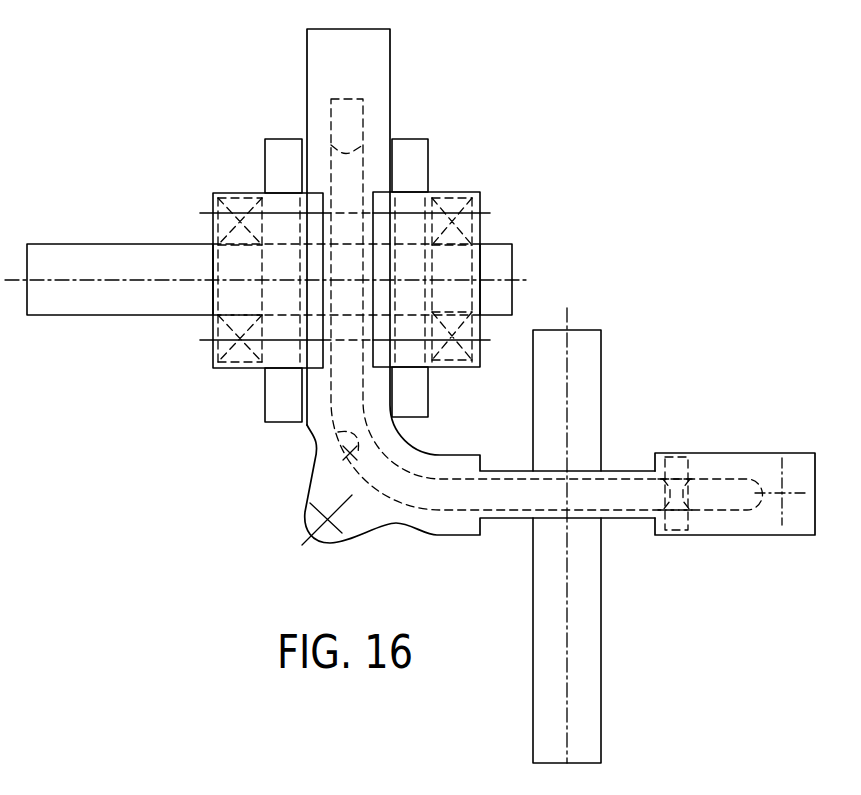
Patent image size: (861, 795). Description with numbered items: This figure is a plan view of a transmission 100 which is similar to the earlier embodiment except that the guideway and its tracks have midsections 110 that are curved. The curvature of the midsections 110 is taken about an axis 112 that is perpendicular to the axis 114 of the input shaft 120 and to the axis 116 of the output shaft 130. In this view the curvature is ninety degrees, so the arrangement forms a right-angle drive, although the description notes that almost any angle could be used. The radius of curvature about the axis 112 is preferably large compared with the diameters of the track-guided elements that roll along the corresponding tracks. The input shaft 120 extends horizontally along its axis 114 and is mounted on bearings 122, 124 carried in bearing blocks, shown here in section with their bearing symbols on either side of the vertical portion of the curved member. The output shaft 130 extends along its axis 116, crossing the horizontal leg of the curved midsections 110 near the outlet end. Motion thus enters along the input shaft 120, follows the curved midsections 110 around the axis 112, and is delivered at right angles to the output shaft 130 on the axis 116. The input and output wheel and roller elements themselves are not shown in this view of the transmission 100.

The transmission 100 is at (188, 449).
The midsections 110 is at (340, 455).
The axis 112 is at (447, 388).
The axis 114 is at (15, 283).
The axis 116 is at (567, 321).
The input shaft 120 is at (77, 316).
The bearing 122 is at (240, 367).
The bearing 124 is at (448, 202).
The output shaft 130 is at (601, 352).